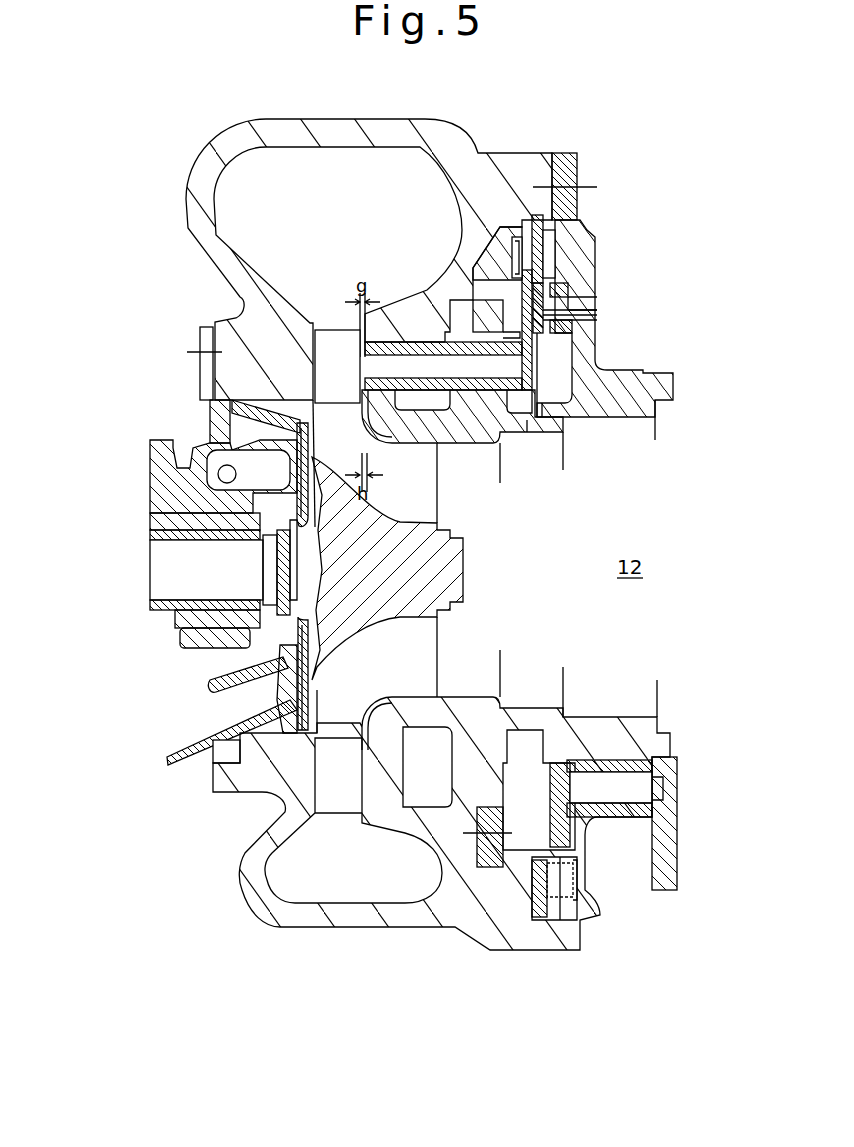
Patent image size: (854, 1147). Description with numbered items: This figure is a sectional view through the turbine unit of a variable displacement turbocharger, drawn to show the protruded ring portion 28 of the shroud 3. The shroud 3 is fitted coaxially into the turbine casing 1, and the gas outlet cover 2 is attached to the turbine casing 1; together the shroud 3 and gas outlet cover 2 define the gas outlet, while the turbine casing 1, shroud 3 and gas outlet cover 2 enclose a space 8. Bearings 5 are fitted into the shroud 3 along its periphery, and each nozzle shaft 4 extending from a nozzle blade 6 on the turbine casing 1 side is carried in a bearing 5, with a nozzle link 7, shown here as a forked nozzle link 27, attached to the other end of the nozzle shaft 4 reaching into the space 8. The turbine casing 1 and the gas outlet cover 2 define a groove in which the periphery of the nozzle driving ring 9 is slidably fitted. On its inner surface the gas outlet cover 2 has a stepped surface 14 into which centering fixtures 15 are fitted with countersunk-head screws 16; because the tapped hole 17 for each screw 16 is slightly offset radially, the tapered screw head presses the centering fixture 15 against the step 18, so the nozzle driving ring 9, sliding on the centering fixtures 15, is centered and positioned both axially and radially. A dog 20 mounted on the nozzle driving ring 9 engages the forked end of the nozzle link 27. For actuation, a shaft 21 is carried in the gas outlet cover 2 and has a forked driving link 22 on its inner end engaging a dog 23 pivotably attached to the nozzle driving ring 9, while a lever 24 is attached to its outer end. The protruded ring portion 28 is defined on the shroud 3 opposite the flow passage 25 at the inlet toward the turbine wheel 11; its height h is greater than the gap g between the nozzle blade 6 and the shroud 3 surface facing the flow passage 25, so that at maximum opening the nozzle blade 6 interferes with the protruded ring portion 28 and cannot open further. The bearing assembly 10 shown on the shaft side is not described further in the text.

The turbine casing 1 is at (246, 140).
The gas outlet cover 2 is at (597, 248).
The shroud 3 is at (474, 432).
The nozzle shaft 4 is at (437, 368).
The bearing 5 is at (405, 348).
The nozzle blade 6 is at (330, 340).
The nozzle link 7 is at (527, 420).
The space 8 is at (557, 380).
The nozzle driving ring 9 is at (575, 225).
The bearing assembly 10 is at (233, 546).
The turbine wheel 11 is at (450, 585).
The stepped surface 14 is at (590, 299).
The centering fixture 15 is at (572, 325).
The countersunk-head screw 16 is at (538, 318).
The tapped hole 17 is at (560, 313).
The step 18 is at (566, 278).
The dog 20 is at (525, 222).
The shaft 21 is at (633, 793).
The forked driving link 22 is at (552, 768).
The dog 23 is at (580, 917).
The lever 24 is at (660, 853).
The flow passage 25 is at (352, 870).
The forked nozzle link 27 is at (522, 300).
The protruded ring portion 28 is at (362, 413).